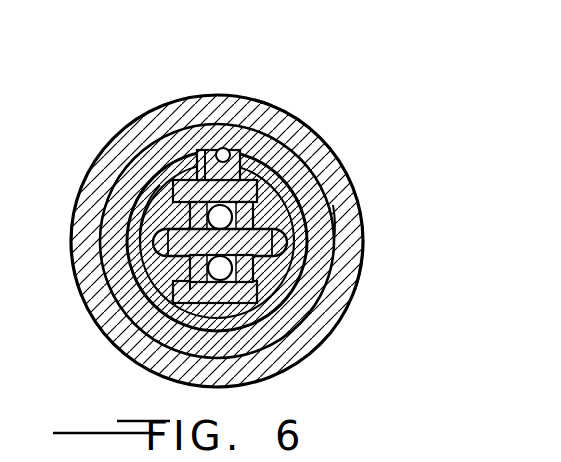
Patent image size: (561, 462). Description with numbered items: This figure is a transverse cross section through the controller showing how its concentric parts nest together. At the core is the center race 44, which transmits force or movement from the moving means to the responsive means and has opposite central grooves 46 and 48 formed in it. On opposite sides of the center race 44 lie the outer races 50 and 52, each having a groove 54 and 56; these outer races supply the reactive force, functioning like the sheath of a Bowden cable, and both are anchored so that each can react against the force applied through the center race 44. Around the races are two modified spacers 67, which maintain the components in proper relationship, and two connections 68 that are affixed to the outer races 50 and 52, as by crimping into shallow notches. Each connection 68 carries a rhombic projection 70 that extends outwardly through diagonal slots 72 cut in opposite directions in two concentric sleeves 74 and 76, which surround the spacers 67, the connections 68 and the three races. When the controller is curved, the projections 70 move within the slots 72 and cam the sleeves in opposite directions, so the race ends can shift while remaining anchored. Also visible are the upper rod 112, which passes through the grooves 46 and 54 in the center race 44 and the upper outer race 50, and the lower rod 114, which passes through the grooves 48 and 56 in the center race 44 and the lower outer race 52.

The center race 44 is at (335, 247).
The central groove 46 is at (178, 212).
The central groove 48 is at (190, 278).
The outer race 50 is at (262, 195).
The outer race 52 is at (238, 305).
The groove 54 is at (177, 197).
The groove 56 is at (183, 290).
The modified spacer 67 is at (298, 188).
The connection 68 is at (168, 200).
The rhombic projection 70 is at (197, 150).
The diagonal slot 72 is at (224, 148).
The concentric sleeve 74 is at (157, 236).
The concentric sleeve 76 is at (135, 262).
The rod 112 is at (318, 192).
The rod 114 is at (345, 300).